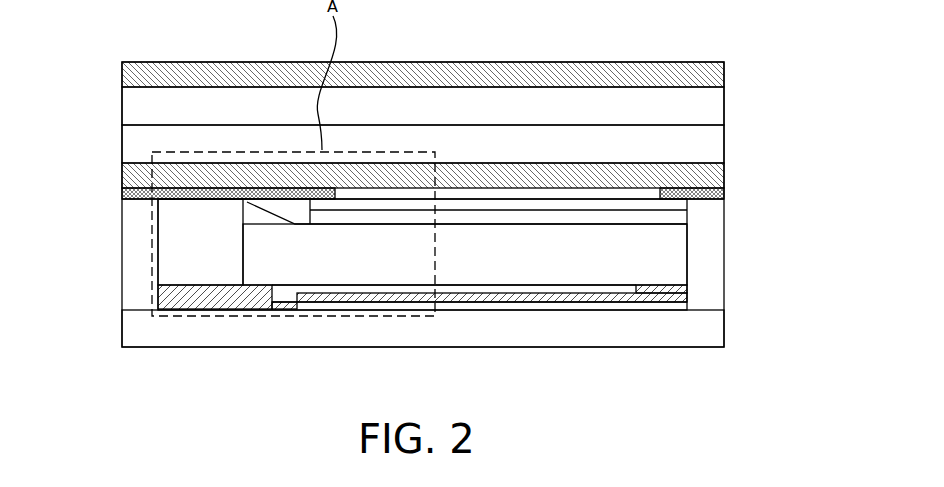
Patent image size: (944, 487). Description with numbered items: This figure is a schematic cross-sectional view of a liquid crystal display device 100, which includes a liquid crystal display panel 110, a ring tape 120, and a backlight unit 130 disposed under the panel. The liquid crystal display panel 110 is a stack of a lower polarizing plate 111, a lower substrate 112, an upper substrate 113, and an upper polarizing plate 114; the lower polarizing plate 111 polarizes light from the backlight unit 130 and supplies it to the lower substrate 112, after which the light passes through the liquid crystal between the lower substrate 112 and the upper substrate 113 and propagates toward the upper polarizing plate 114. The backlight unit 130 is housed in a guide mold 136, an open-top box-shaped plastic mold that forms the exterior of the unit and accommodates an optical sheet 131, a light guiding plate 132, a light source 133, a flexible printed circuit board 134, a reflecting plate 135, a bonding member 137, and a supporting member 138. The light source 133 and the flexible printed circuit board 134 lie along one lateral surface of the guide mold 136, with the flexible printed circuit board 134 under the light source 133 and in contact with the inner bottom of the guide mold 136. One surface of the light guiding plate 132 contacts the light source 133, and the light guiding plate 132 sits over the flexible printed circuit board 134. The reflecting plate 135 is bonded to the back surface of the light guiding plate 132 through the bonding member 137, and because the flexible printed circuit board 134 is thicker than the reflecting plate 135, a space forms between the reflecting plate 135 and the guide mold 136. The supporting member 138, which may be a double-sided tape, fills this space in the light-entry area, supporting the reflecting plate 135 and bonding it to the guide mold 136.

The liquid crystal display device 100 is at (726, 43).
The liquid crystal display panel 110 is at (480, 125).
The lower polarizing plate 111 is at (455, 175).
The lower substrate 112 is at (711, 143).
The upper substrate 113 is at (711, 104).
The upper polarizing plate 114 is at (711, 72).
The ring tape 120 is at (138, 193).
The backlight unit 130 is at (401, 285).
The optical sheet 131 is at (320, 217).
The light guiding plate 132 is at (263, 245).
The light source 133 is at (225, 258).
The flexible printed circuit board 134 is at (233, 295).
The reflecting plate 135 is at (297, 297).
The guide mold 136 is at (394, 341).
The bonding member 137 is at (680, 285).
The supporting member 138 is at (290, 305).